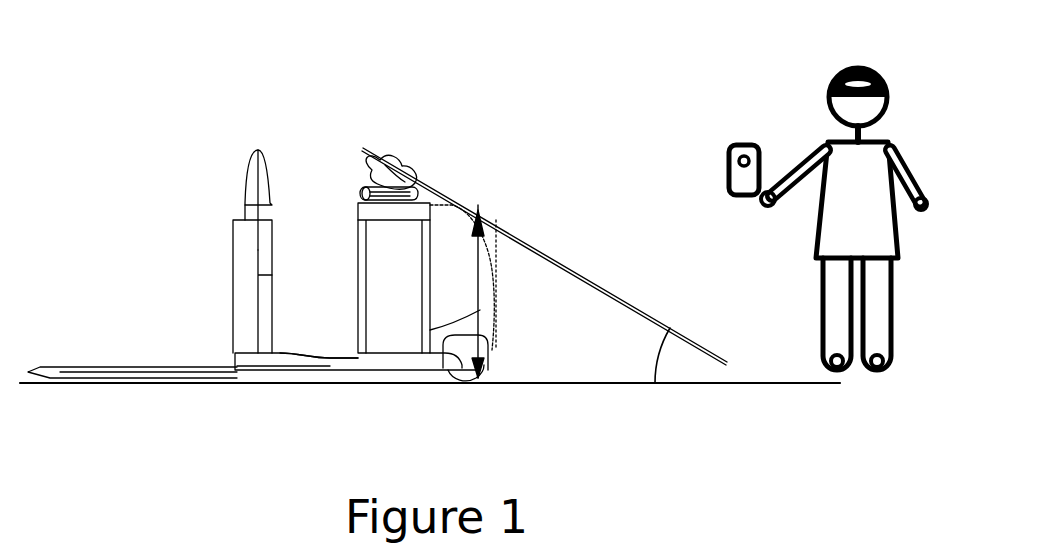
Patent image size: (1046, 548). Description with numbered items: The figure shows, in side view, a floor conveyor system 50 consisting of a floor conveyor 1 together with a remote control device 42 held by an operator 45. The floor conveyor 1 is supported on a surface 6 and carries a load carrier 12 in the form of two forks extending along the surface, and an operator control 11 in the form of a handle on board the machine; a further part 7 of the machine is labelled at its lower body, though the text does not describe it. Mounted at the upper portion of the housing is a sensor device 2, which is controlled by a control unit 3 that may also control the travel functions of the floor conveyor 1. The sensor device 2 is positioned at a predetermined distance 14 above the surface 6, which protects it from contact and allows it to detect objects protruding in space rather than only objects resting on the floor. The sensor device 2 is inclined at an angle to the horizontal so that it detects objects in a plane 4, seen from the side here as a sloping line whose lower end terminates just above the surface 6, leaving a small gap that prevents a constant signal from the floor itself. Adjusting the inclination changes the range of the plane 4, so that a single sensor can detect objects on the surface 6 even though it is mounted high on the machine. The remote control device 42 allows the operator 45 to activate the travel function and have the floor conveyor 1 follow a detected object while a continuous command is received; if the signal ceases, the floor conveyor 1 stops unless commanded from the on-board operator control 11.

The floor conveyor 1 is at (186, 206).
The sensor device 2 is at (478, 205).
The control unit 3 is at (385, 168).
The plane 4 is at (528, 242).
The surface 6 is at (533, 383).
The chassis 7 is at (312, 335).
The operator control 11 is at (368, 167).
The load carrier 12 is at (60, 368).
The predetermined distance 14 is at (448, 370).
The remote control device 42 is at (727, 172).
The operator 45 is at (771, 104).
The floor conveyor system 50 is at (180, 83).